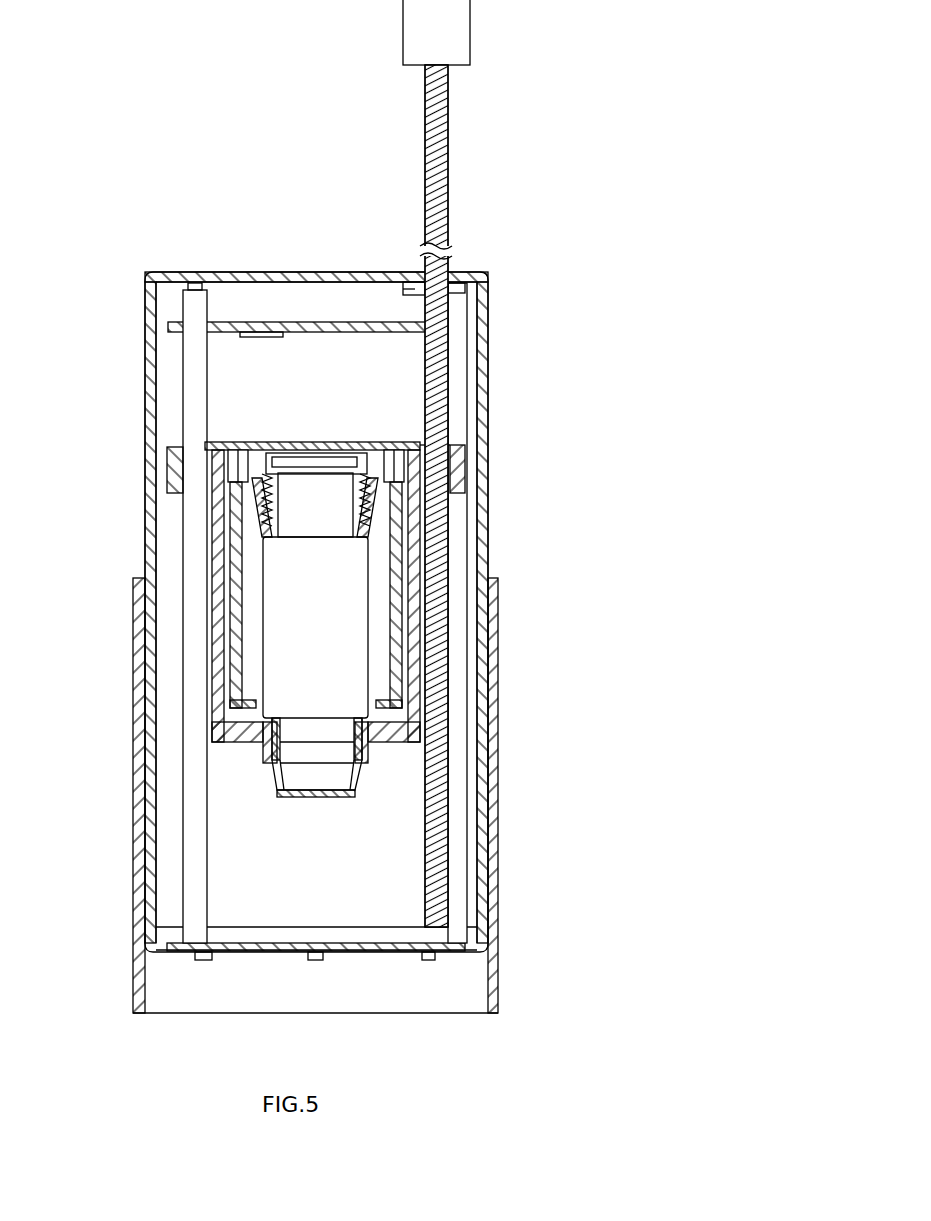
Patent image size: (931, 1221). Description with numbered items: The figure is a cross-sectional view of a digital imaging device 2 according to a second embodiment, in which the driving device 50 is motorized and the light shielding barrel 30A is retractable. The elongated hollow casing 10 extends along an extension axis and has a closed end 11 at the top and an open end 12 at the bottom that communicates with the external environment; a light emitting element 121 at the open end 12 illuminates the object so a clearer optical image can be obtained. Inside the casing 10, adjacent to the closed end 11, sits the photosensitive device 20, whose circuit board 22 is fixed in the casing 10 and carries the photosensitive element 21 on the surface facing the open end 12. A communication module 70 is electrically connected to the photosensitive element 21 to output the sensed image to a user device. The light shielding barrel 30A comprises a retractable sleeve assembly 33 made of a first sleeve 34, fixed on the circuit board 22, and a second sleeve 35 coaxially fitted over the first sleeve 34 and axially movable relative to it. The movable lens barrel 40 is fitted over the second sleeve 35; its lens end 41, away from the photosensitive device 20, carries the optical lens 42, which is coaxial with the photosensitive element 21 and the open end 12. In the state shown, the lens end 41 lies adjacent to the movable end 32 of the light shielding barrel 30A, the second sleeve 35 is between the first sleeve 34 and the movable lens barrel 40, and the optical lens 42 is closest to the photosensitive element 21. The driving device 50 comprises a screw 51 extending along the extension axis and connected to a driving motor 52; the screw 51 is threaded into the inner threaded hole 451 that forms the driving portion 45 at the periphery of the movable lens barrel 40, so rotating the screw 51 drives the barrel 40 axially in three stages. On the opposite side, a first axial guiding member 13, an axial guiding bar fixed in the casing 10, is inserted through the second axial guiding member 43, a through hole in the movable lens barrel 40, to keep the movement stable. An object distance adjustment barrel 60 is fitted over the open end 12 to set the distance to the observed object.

The digital imaging device 2 is at (123, 233).
The casing 10 is at (359, 575).
The closed end 11 is at (235, 270).
The open end 12 is at (368, 952).
The light emitting element 121 is at (432, 960).
The first axial guiding member 13 is at (193, 410).
The photosensitive device 20 is at (326, 442).
The photosensitive element 21 is at (253, 468).
The circuit board 22 is at (410, 443).
The light shielding barrel 30A is at (442, 498).
The movable end 32 is at (395, 710).
The retractable sleeve assembly 33 is at (365, 520).
The first sleeve 34 is at (376, 537).
The second sleeve 35 is at (397, 618).
The movable lens barrel 40 is at (410, 667).
The lens end 41 is at (250, 740).
The optical lens 42 is at (320, 797).
The second axial guiding member 43 is at (215, 490).
The driving portion 45 is at (468, 466).
The inner threaded hole 451 is at (420, 438).
The driving device 50 is at (493, 93).
The screw 51 is at (450, 172).
The driving motor 52 is at (403, 30).
The object distance adjustment barrel 60 is at (133, 720).
The communication module 70 is at (255, 338).